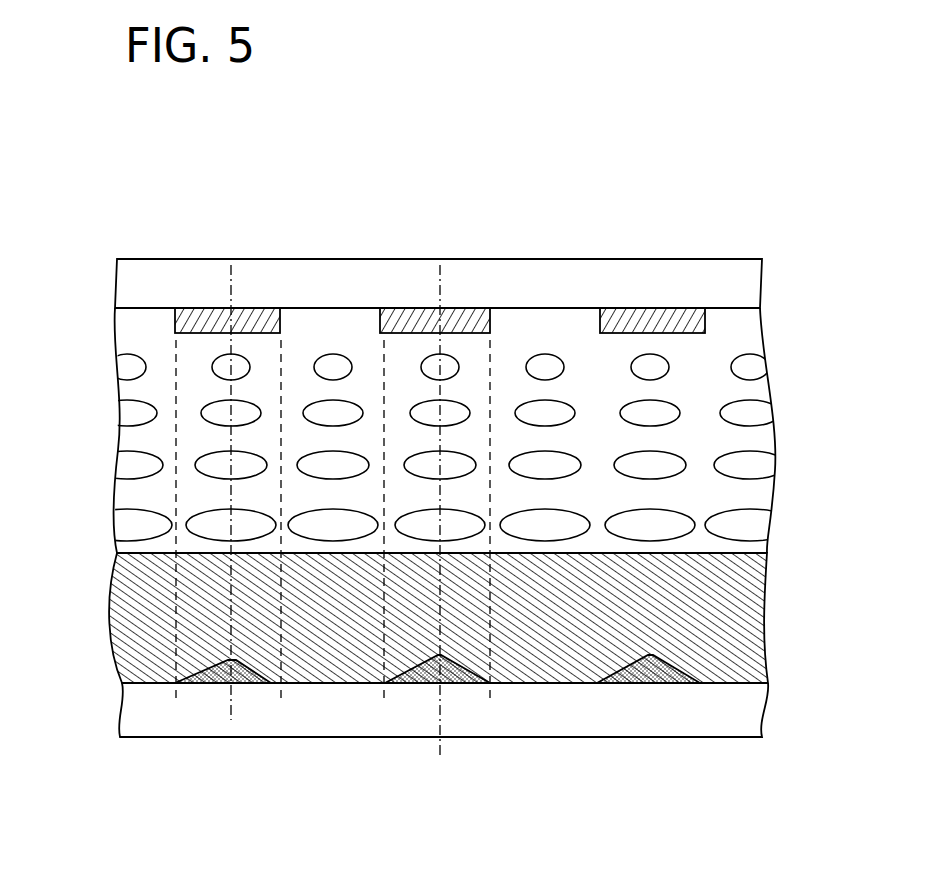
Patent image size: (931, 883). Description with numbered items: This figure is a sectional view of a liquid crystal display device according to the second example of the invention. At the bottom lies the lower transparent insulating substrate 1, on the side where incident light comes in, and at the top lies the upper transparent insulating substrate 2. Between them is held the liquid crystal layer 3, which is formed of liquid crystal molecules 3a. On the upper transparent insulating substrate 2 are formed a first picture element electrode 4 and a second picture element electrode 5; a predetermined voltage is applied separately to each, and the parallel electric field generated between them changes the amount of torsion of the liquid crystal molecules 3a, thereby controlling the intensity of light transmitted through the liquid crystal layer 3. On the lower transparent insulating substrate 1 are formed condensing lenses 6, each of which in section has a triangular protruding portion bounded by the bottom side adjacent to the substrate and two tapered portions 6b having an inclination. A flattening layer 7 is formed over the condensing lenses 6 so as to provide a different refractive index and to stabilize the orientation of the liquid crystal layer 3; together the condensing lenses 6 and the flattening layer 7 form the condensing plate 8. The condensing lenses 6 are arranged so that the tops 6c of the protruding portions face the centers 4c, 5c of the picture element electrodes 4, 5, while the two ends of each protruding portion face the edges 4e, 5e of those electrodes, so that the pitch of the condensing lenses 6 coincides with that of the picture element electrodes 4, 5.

The lower transparent insulating substrate 1 is at (547, 717).
The upper transparent insulating substrate 2 is at (605, 272).
The liquid crystal layer 3 is at (83, 320).
The liquid crystal molecule 3a is at (757, 417).
The first picture element electrode 4 is at (252, 307).
The center of first picture element electrode 4c is at (231, 308).
The edge of first picture element electrode 4e is at (176, 330).
The second picture element electrode 5 is at (468, 307).
The center of second picture element electrode 5c is at (440, 308).
The edge of second picture element electrode 5e is at (381, 333).
The condensing lens 6 is at (243, 673).
The tapered portion 6b is at (202, 680).
The top of protruding portion 6c is at (228, 665).
The flattening layer 7 is at (752, 601).
The condensing plate 8 is at (83, 560).